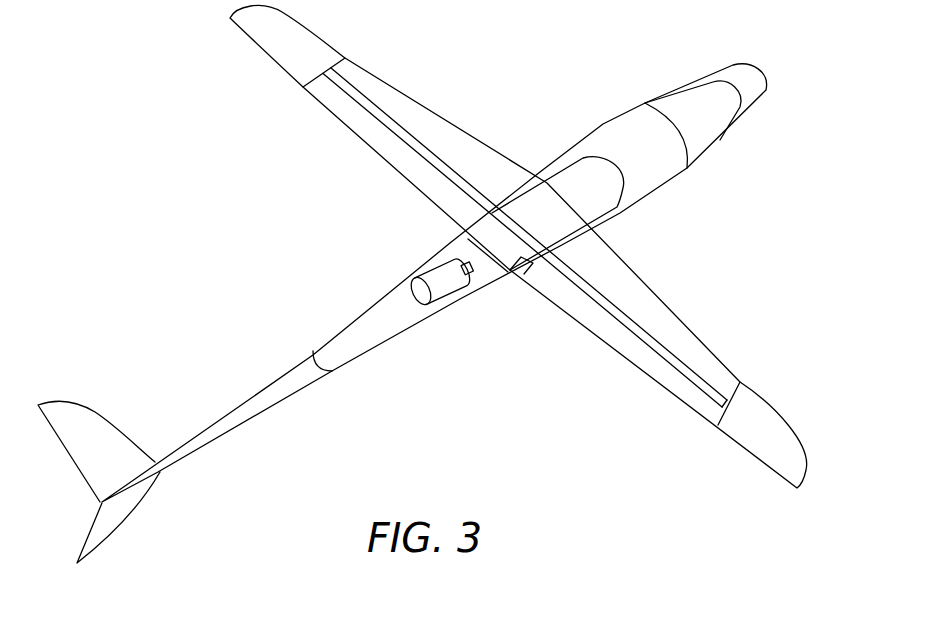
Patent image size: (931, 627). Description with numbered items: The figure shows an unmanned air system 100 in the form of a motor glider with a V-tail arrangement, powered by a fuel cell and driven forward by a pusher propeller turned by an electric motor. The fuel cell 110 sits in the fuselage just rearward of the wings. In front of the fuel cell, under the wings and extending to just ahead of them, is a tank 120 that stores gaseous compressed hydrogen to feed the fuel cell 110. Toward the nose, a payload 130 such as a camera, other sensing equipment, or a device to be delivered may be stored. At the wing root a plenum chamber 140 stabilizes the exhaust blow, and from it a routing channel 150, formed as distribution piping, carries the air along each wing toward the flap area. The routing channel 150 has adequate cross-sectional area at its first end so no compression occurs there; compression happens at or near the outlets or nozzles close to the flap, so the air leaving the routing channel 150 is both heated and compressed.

The unmanned aerial vehicle 100 is at (554, 51).
The fuel cell 110 is at (450, 288).
The tank 120 is at (609, 196).
The payload 130 is at (712, 133).
The plenum chamber 140 is at (523, 263).
The routing channel 150 is at (677, 372).